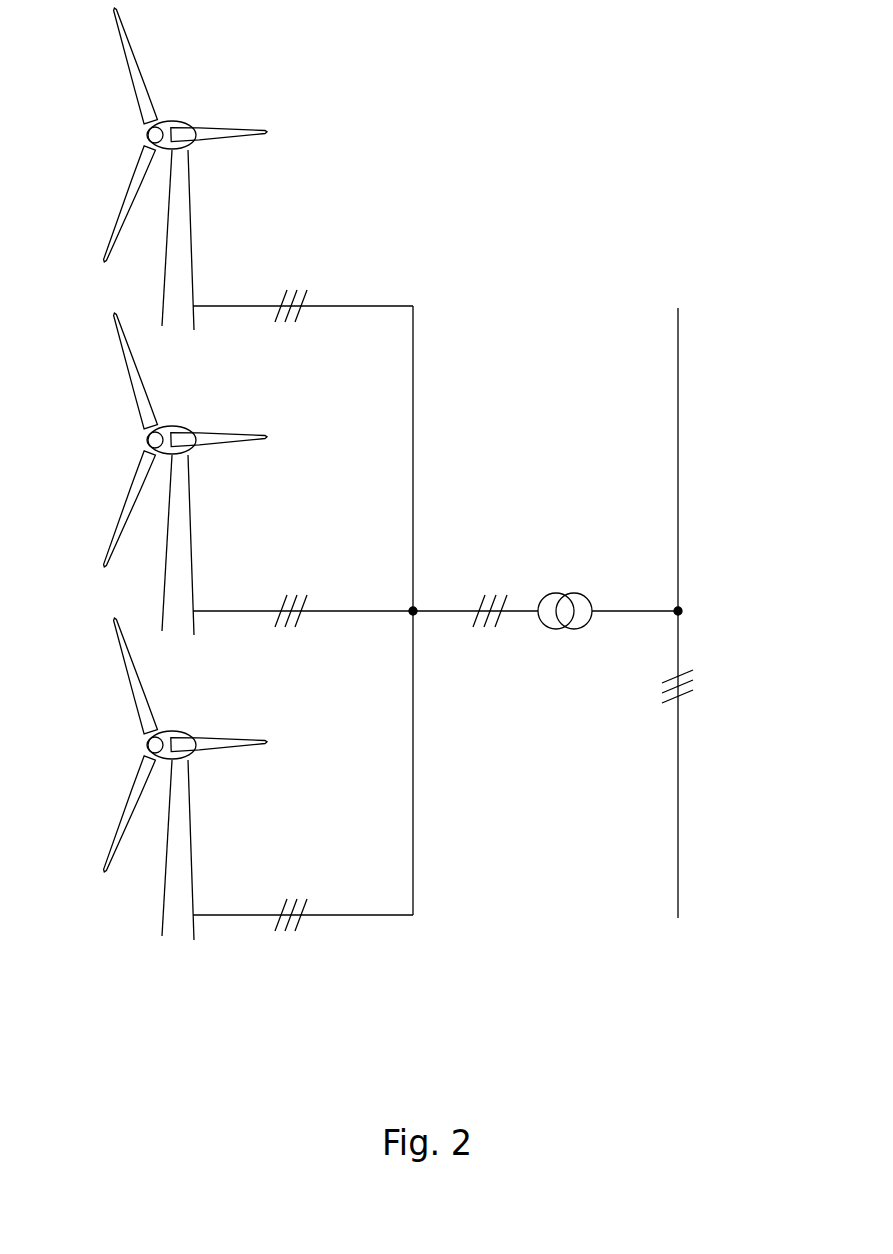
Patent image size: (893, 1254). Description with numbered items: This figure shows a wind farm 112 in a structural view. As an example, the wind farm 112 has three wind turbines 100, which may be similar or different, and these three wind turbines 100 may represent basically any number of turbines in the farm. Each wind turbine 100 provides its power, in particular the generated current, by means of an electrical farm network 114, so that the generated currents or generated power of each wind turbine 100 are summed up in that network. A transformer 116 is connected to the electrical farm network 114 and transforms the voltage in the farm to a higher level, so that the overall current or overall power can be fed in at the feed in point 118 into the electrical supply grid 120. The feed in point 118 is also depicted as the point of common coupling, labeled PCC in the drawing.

The wind turbine 100 is at (182, 223).
The wind farm 112 is at (410, 474).
The electrical farm network 114 is at (433, 609).
The transformer 116 is at (569, 580).
The feed in point 118 is at (693, 583).
The electrical supply grid 120 is at (679, 340).